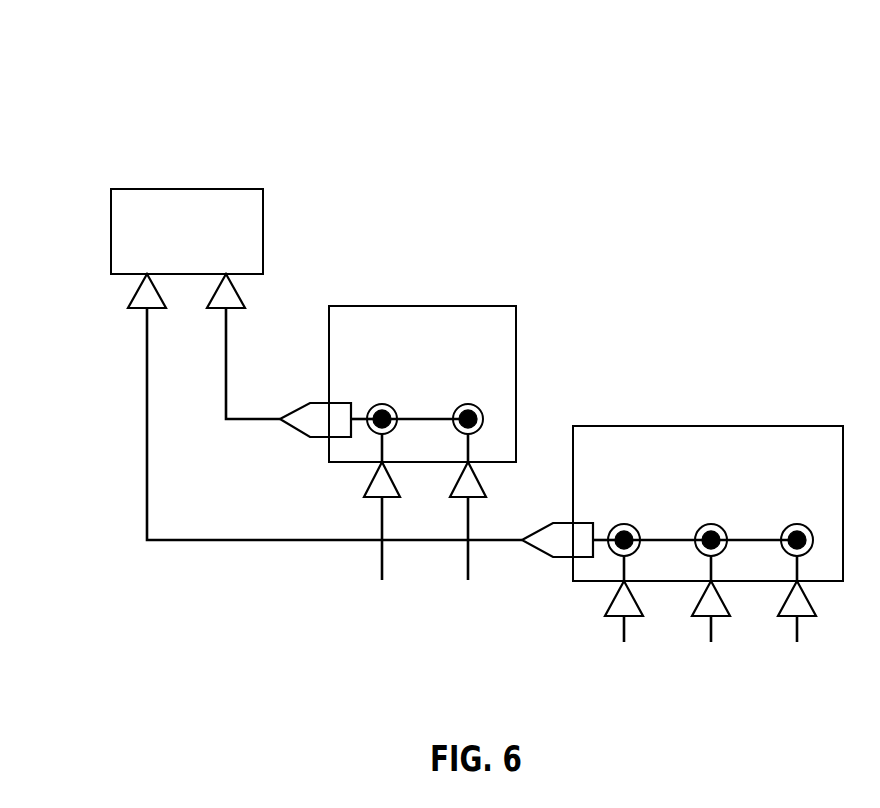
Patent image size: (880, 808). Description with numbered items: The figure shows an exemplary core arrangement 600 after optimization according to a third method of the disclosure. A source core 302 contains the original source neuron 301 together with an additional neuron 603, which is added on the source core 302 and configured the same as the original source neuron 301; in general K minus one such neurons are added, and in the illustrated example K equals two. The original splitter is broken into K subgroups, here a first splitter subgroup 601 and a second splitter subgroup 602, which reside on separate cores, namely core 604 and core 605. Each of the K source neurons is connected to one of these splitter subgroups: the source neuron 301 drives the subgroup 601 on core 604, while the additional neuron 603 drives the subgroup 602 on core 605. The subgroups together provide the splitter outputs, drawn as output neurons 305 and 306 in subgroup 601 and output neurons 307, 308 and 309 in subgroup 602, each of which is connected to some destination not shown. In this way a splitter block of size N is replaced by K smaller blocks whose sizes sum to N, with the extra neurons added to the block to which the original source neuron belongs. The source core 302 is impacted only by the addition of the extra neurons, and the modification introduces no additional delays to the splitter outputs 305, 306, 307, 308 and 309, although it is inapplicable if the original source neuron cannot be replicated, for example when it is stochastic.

The core arrangement after optimization 600 is at (455, 44).
The source core 302 is at (233, 189).
The source neuron 301 is at (240, 297).
The additional neurons 603 is at (135, 291).
The core 604 is at (447, 306).
The core 605 is at (755, 426).
The splitter subgroup 601 is at (486, 390).
The splitter subgroup 602 is at (612, 513).
The output neuron 305 is at (383, 528).
The output neuron 306 is at (468, 528).
The output neuron 307 is at (626, 618).
The output neuron 308 is at (712, 618).
The output neuron 309 is at (799, 618).